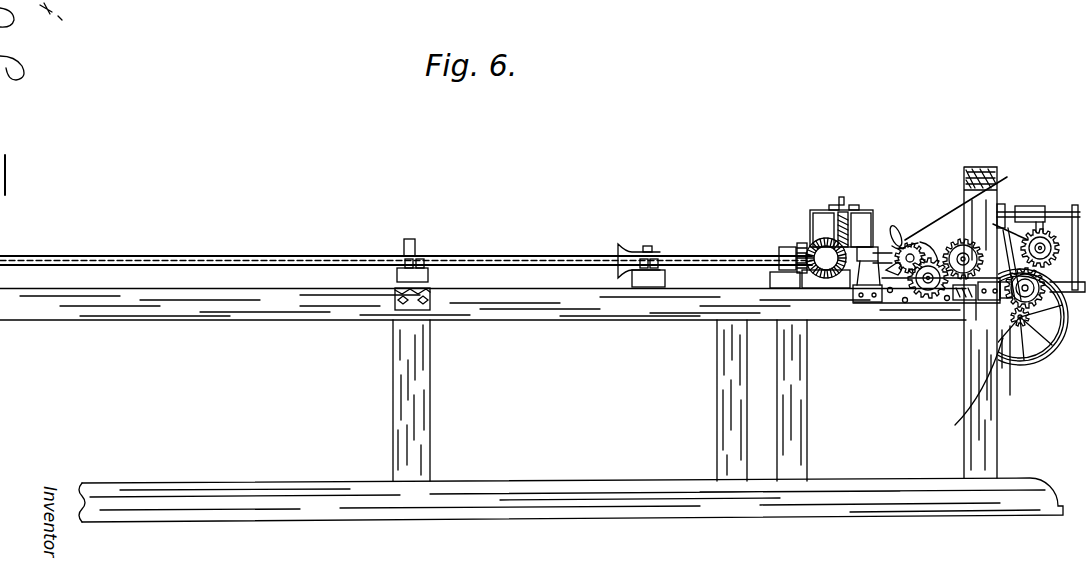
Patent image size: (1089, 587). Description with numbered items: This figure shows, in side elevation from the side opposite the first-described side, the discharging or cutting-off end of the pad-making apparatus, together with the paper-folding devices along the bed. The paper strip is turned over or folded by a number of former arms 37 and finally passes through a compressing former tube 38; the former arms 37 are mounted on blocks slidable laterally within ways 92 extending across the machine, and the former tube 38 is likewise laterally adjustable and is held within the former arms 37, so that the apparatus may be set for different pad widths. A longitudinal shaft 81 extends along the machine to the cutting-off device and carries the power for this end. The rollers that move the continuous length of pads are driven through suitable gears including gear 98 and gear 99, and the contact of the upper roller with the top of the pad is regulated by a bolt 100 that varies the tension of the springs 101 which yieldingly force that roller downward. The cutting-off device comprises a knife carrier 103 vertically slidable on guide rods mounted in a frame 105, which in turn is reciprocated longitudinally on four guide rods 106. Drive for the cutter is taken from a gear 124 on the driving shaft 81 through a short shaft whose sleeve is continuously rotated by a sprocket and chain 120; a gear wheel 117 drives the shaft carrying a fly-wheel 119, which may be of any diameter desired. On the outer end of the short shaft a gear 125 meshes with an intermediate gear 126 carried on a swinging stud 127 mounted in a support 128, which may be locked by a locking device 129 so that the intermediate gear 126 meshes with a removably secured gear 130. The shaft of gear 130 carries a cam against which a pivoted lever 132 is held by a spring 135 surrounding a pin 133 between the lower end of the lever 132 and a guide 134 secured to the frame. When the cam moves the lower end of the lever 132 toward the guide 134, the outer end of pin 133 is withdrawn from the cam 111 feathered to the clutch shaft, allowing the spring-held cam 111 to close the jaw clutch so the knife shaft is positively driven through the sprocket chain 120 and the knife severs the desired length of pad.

The shaft 81 is at (281, 257).
The formers 37 is at (416, 244).
The compressing former tube 38 is at (628, 250).
The ways 92 is at (430, 283).
The gear 98 is at (822, 238).
The gear 99 is at (800, 247).
The bolt 100 is at (848, 190).
The springs 101 is at (868, 232).
The knife carrier 103 is at (1042, 236).
The frame 105 is at (1028, 206).
The guide rods 106 is at (1052, 212).
The cam 111 is at (1050, 356).
The gear wheel 117 is at (1020, 369).
The fly-wheel 119 is at (963, 387).
The sprocket and chain 120 is at (932, 244).
The gear 124 is at (882, 280).
The gear 125 is at (893, 283).
The intermediate gear 126 is at (912, 300).
The swinging stud 127 is at (926, 283).
The support 128 is at (898, 225).
The locking device 129 is at (920, 245).
The gear 130 is at (973, 199).
The pivoted lever 132 is at (1000, 312).
The pin 133 is at (1000, 335).
The guide 134 is at (945, 305).
The spring 135 is at (964, 302).